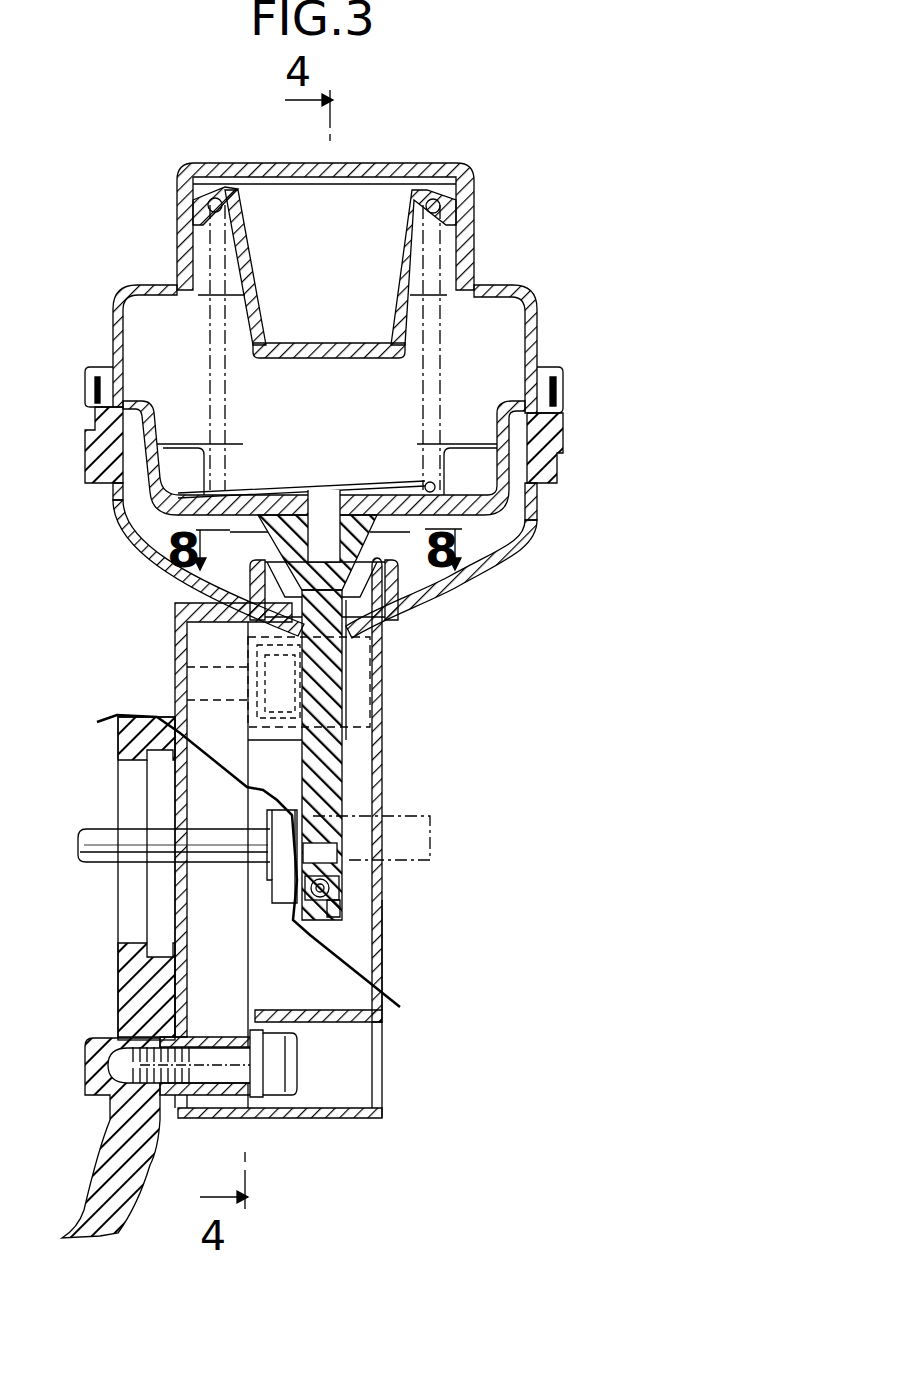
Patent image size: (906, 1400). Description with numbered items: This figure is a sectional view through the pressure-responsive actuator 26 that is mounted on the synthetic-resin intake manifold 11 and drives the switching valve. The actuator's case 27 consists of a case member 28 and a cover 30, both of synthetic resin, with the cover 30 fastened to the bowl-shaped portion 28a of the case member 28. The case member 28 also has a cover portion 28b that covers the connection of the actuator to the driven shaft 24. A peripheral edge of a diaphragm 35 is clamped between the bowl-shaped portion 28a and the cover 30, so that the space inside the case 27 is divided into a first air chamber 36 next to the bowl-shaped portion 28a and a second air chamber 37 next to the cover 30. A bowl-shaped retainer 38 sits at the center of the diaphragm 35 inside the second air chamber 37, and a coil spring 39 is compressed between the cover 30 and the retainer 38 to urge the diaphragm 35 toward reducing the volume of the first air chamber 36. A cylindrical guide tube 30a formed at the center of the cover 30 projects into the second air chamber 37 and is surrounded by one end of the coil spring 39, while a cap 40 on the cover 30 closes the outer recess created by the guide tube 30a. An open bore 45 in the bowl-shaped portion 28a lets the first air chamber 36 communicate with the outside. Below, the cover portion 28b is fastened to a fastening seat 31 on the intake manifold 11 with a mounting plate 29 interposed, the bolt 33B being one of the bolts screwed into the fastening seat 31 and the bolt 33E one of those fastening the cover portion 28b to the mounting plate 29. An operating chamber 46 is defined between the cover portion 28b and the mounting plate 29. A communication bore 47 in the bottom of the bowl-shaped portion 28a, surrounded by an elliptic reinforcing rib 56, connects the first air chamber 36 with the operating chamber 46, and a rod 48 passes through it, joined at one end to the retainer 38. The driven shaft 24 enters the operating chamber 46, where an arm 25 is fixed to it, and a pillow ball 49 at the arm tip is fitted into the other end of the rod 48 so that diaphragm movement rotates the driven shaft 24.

The intake manifold 11 is at (143, 1182).
The driven shaft 24 is at (95, 835).
The arm 25 is at (267, 888).
The pressure-responsive actuator 26 is at (543, 348).
The case 27 is at (384, 947).
The case member 28 is at (380, 770).
The bowl-shaped portion 28a is at (535, 525).
The cover portion 28b is at (383, 935).
The mounting plate 29 is at (175, 623).
The cover 30 is at (145, 285).
The cylindrical guide tube 30a is at (300, 348).
The fastening seat 31 is at (178, 998).
The bolt 33B is at (230, 1075).
The bolt 33E is at (207, 664).
The diaphragm 35 is at (455, 590).
The first air chamber 36 is at (250, 575).
The second air chamber 37 is at (345, 463).
The bowl-shaped retainer 38 is at (487, 453).
The coil spring 39 is at (473, 203).
The cap 40 is at (368, 163).
The open bore 45 is at (450, 593).
The operating chamber 46 is at (350, 940).
The communication bore 47 is at (345, 640).
The rod 48 is at (340, 810).
The pillow ball 49 is at (330, 888).
The reinforcing rib 56 is at (395, 568).